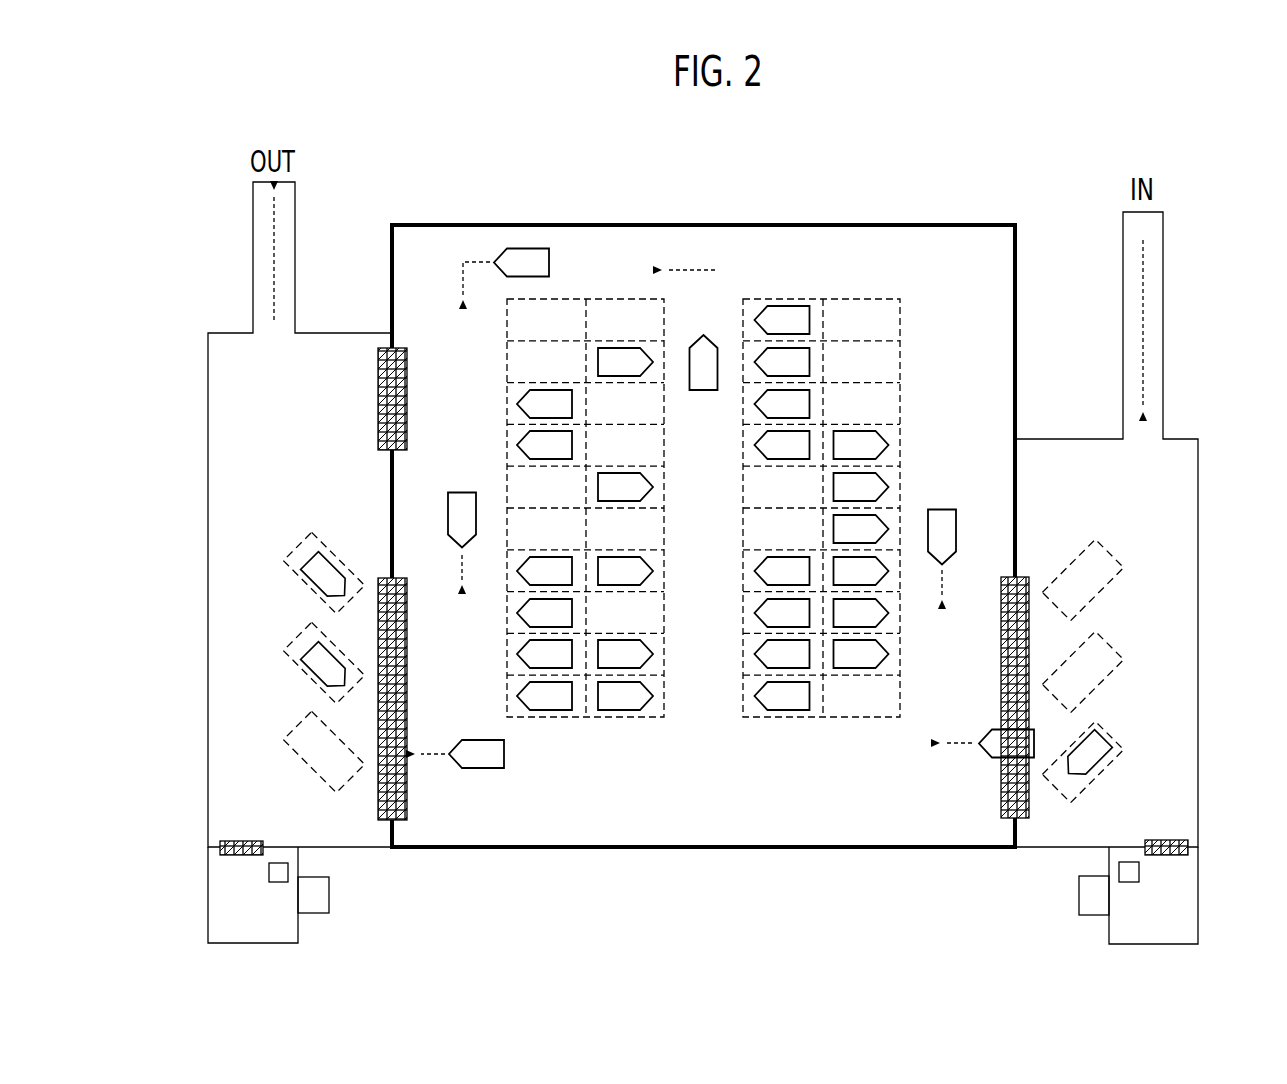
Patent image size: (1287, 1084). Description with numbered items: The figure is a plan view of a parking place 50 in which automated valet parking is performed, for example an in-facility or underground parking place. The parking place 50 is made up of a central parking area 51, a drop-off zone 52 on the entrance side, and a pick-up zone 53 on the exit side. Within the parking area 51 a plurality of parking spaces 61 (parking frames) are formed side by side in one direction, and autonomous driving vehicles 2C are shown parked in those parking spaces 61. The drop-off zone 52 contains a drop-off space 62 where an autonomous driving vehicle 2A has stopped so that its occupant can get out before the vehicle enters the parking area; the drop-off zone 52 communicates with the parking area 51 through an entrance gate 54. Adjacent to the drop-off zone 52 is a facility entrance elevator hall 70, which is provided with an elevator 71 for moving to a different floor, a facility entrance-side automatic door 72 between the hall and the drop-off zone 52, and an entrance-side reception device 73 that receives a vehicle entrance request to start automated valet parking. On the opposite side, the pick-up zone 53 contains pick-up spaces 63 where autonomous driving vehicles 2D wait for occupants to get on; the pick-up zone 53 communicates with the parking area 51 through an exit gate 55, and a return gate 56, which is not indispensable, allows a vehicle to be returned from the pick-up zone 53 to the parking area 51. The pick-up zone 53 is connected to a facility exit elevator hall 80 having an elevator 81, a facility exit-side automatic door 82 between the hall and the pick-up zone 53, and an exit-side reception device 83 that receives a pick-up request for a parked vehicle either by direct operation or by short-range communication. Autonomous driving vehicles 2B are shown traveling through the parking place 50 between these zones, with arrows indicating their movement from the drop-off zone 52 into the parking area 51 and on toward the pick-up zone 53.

The parking place 50 is at (1068, 166).
The parking area 51 is at (926, 225).
The drop-off zone 52 is at (1198, 487).
The pick-up zone 53 is at (208, 418).
The entrance gate 54 is at (1006, 818).
The exit gate 55 is at (407, 780).
The return gate 56 is at (408, 370).
The parking space 61 is at (630, 299).
The drop-off space 62 is at (1114, 728).
The pick-up space 63 is at (308, 533).
The facility entrance elevator hall 70 is at (1198, 925).
The elevator 71 is at (1079, 905).
The facility entrance-side automatic door 72 is at (1178, 840).
The entrance-side reception device 73 is at (1119, 870).
The facility exit elevator hall 80 is at (208, 925).
The elevator 81 is at (330, 905).
The facility exit-side automatic door 82 is at (238, 841).
The exit-side reception device 83 is at (290, 870).
The autonomous driving vehicle 2A is at (1108, 760).
The autonomous driving vehicle 2B is at (526, 248).
The autonomous driving vehicle 2C is at (812, 320).
The autonomous driving vehicle 2D is at (306, 560).